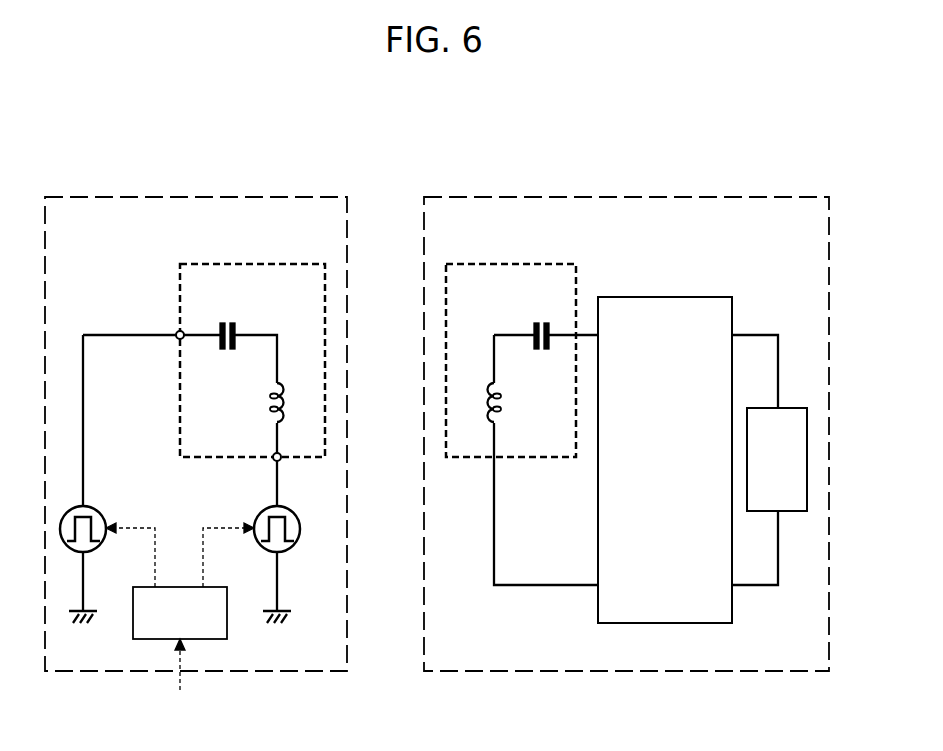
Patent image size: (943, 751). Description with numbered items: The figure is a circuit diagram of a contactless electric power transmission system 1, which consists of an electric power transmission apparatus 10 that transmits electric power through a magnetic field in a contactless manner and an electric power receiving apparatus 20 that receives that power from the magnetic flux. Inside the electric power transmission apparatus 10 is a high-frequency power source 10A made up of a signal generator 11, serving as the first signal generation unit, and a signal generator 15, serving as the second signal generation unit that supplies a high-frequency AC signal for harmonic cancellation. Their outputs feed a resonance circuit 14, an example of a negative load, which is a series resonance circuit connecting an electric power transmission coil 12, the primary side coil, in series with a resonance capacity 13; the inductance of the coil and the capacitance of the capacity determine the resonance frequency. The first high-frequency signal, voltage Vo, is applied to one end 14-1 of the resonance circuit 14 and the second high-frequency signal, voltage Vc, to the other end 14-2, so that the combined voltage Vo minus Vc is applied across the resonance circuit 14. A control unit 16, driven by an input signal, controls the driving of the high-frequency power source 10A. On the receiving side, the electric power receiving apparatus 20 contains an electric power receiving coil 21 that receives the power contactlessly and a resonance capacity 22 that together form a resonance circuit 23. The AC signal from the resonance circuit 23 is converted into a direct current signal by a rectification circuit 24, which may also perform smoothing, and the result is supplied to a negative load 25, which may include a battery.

The contactless electric power transmission system 1 is at (464, 150).
The electric power transmission apparatus 10 is at (262, 197).
The high-frequency power source 10A is at (190, 503).
The signal generator 11 is at (99, 512).
The electric power transmission coil 12 is at (270, 401).
The resonance capacity 13 is at (230, 320).
The resonance circuit 14 is at (288, 263).
The one end of the resonance circuit 14-1 is at (177, 332).
The other end of the resonance circuit 14-2 is at (279, 461).
The signal generator 15 is at (261, 512).
The control unit 16 is at (222, 587).
The electric power receiving apparatus 20 is at (640, 197).
The electric power receiving coil 21 is at (501, 403).
The resonance capacity 22 is at (543, 320).
The resonance circuit 23 is at (520, 263).
The rectification circuit 24 is at (690, 297).
The negative load 25 is at (800, 407).